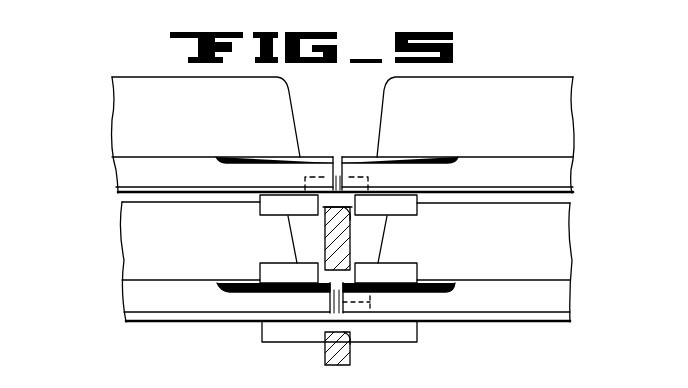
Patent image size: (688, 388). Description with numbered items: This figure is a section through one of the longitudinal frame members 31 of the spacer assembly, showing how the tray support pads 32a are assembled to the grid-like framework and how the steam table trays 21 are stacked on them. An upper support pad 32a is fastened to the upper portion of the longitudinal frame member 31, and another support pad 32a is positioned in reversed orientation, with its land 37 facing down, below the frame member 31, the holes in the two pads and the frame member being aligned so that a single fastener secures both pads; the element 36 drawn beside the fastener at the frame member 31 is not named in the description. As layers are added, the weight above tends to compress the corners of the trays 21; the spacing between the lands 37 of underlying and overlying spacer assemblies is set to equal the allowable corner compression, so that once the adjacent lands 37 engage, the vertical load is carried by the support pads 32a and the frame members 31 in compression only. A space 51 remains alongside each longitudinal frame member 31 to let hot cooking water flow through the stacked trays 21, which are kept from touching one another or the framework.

The steam table tray 21 is at (392, 96).
The land 37 is at (365, 172).
The tray support pad 32a is at (418, 212).
The space 51 is at (294, 243).
The longitudinal frame member 31 is at (291, 221).
The pin head 36 is at (352, 221).